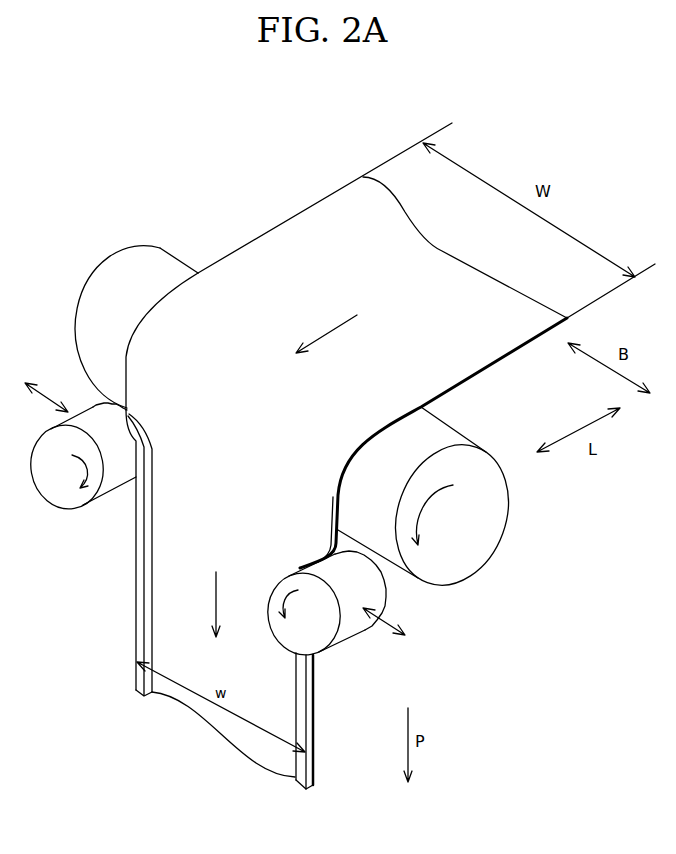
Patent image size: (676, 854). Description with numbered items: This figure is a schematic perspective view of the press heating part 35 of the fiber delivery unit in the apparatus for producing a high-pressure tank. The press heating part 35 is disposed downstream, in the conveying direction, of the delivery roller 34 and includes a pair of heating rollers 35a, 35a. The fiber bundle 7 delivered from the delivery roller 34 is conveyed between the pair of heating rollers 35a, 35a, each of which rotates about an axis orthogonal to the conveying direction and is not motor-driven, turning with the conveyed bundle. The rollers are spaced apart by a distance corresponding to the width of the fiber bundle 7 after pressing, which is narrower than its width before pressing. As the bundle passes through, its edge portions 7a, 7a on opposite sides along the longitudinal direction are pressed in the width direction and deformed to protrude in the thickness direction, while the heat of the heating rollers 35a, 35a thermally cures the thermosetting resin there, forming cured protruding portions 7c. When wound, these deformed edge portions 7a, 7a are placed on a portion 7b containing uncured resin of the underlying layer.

The fiber bundle 7 is at (488, 284).
The edge portion 7a is at (270, 232).
The portion including uncured thermosetting resin 7b is at (232, 738).
The protruding portion 7c is at (138, 691).
The delivery roller 34 is at (472, 533).
The press heating part 35 is at (435, 658).
The heating roller 35a is at (58, 483).